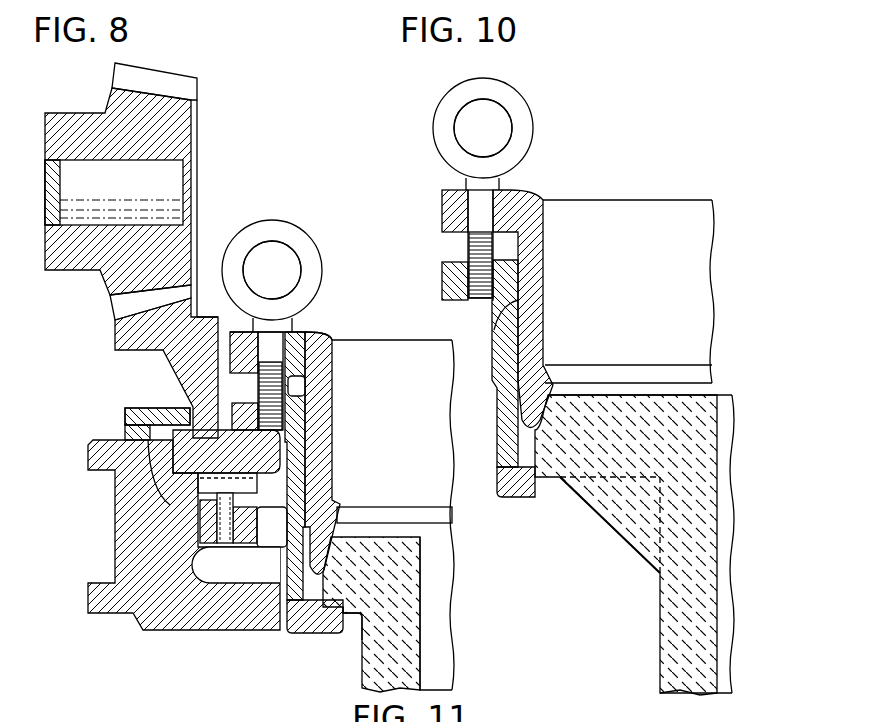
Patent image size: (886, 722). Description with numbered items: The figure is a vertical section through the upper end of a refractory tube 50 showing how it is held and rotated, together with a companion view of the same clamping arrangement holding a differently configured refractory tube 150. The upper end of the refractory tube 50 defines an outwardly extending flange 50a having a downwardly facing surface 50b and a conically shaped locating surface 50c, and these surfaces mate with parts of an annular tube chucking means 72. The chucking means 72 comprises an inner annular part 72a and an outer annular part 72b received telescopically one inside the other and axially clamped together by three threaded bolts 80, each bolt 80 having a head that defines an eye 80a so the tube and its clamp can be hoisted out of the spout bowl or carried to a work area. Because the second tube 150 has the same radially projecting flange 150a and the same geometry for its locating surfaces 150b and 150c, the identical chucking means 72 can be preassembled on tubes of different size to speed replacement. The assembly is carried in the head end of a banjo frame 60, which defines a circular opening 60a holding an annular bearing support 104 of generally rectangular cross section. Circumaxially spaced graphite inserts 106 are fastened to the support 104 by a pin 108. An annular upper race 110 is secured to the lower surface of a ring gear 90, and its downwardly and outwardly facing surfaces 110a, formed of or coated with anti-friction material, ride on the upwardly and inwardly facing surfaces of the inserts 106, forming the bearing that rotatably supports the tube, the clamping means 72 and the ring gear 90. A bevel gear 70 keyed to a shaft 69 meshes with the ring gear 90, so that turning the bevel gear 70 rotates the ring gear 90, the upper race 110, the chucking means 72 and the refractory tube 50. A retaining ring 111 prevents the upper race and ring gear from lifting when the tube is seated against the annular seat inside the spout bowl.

In FIG. 8, the bevel gear 70 is at (180, 85).
In FIG. 8, the shaft 69 is at (113, 192).
In FIG. 8, the ring gear 90 is at (128, 327).
In FIG. 8, the retaining ring 111 is at (138, 403).
In FIG. 8, the annular upper race 110 is at (148, 440).
In FIG. 8, the downwardly and outwardly facing surfaces 110a is at (185, 487).
In FIG. 8, the annular bearing support 104 is at (198, 500).
In FIG. 8, the pin 108 is at (222, 517).
In FIG. 8, the graphite inserts 106 is at (245, 494).
In FIG. 8, the banjo frame 60 is at (118, 598).
In FIG. 8, the circular opening 60a is at (210, 575).
In FIG. 8, the refractory tube 50 is at (375, 657).
In FIG. 8, the outwardly extending flange 50a is at (282, 607).
In FIG. 8, the downwardly facing surface 50b is at (343, 615).
In FIG. 8, the conically shaped locating surface 50c is at (337, 510).
In FIG. 8, the annular tube chucking means 72 is at (337, 323).
In FIG. 10, the annular tube chucking means 72 is at (570, 227).
In FIG. 8, the inner annular part 72a is at (333, 383).
In FIG. 10, the inner annular part 72a is at (545, 262).
In FIG. 8, the outer annular part 72b is at (307, 428).
In FIG. 10, the outer annular part 72b is at (517, 287).
In FIG. 8, the threaded bolt 80 is at (283, 230).
In FIG. 10, the threaded bolt 80 is at (525, 115).
In FIG. 8, the eye 80a is at (298, 268).
In FIG. 10, the eye 80a is at (503, 135).
In FIG. 10, the refractory tube 150 is at (677, 627).
In FIG. 10, the outwardly extending flange 150a is at (503, 480).
In FIG. 10, the downwardly facing surface 150b is at (547, 480).
In FIG. 10, the conically shaped locating surface 150c is at (545, 367).